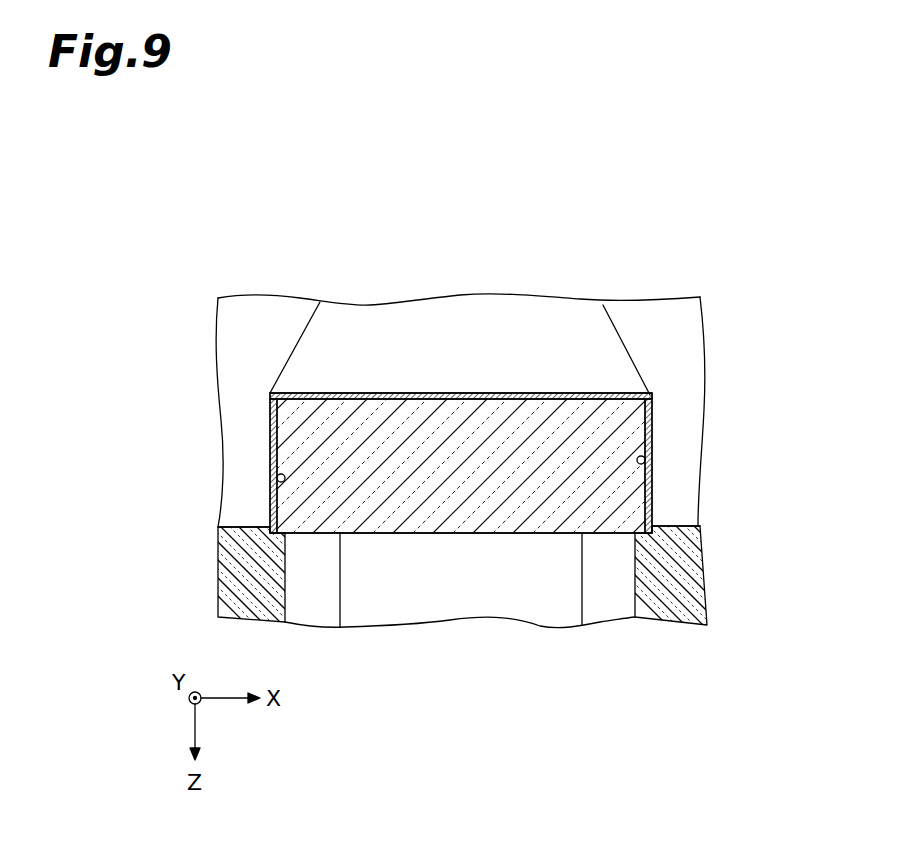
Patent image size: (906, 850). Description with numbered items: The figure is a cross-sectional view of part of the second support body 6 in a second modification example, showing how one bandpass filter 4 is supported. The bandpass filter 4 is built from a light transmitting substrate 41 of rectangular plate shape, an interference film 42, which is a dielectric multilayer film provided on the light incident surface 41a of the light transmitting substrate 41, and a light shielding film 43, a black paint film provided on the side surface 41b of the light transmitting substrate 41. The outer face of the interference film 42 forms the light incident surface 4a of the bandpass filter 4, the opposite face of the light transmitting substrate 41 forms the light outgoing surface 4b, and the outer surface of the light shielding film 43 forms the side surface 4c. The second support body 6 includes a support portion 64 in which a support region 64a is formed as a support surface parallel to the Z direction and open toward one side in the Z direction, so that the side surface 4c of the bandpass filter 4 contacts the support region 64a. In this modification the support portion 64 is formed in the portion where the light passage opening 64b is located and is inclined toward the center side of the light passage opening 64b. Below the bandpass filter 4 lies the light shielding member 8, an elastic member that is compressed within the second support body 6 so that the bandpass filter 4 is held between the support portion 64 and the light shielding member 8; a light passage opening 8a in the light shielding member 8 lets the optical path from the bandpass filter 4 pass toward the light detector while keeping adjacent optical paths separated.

The bandpass filter 4 is at (456, 463).
The light incident surface of bandpass filter 4a is at (462, 393).
The light outgoing surface of bandpass filter 4b is at (463, 534).
The side surface of bandpass filter 4c is at (655, 500).
The light transmitting substrate 41 is at (405, 533).
The light incident surface of light transmitting substrate 41a is at (518, 393).
The side surface of light transmitting substrate 41b is at (270, 428).
The interference film 42 is at (456, 436).
The light shielding film 43 is at (655, 427).
The second support body 6 is at (464, 363).
The support portion 64 is at (464, 383).
The support region 64a is at (276, 478).
The light passage opening 64b is at (484, 327).
The light shielding member 8 is at (460, 556).
The light passage opening of light shielding member 8a is at (285, 577).